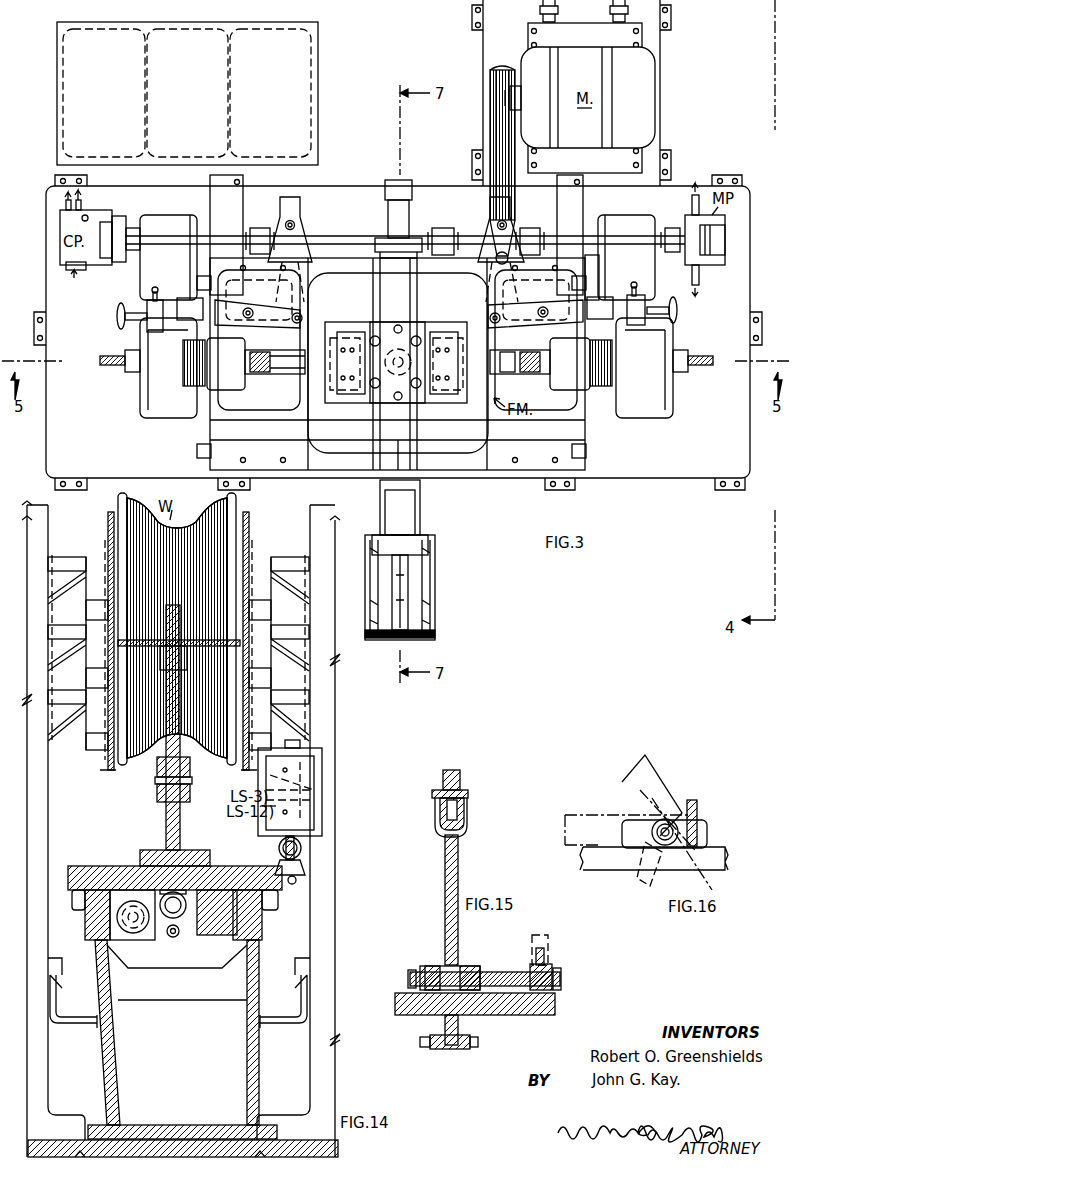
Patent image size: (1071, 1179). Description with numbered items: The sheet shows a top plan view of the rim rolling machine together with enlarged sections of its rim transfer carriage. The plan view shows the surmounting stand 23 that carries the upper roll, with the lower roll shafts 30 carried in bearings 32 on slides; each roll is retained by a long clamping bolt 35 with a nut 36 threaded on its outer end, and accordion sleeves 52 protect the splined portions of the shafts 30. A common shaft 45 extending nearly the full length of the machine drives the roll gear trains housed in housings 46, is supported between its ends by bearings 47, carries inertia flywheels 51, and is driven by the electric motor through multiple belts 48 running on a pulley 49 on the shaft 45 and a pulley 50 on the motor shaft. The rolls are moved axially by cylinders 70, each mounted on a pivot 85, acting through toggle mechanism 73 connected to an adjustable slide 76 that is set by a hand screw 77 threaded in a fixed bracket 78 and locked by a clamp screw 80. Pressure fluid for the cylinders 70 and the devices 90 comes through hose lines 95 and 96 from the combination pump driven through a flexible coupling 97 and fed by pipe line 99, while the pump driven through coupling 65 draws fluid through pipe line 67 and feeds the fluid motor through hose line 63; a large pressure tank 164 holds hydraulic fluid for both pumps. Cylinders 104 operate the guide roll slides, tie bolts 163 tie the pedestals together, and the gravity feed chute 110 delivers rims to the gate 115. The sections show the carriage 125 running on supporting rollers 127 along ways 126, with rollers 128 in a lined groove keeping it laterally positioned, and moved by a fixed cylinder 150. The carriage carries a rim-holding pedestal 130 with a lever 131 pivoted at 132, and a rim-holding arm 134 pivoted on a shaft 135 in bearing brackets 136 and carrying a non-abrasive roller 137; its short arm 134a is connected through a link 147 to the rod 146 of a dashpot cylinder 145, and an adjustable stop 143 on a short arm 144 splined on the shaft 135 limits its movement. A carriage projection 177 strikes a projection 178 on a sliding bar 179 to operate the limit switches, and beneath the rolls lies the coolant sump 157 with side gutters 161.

In FIG. 3, the pressure tank 164 is at (196, 100).
In FIG. 3, the inertia flywheel 51 is at (236, 217).
In FIG. 3, the belt 48 is at (492, 140).
In FIG. 3, the pulley 50 is at (495, 118).
In FIG. 3, the pulley 49 is at (498, 218).
In FIG. 3, the common shaft 45 is at (340, 235).
In FIG. 3, the flexible hose line 95 is at (57, 202).
In FIG. 3, the flexible hose line 96 is at (81, 201).
In FIG. 3, the flexible coupling 97 is at (124, 225).
In FIG. 3, the pipe line 99 is at (70, 272).
In FIG. 3, the housing 46 is at (170, 266).
In FIG. 3, the bearing 47 is at (260, 228).
In FIG. 3, the cylinder 70 is at (297, 212).
In FIG. 3, the pivot 85 is at (295, 226).
In FIG. 3, the cylinder 104 is at (412, 205).
In FIG. 3, the flexible coupling 65 is at (670, 228).
In FIG. 3, the pipe line 67 is at (685, 199).
In FIG. 3, the flexible hose line 63 is at (699, 272).
In FIG. 3, the hand screw 77 is at (117, 314).
In FIG. 3, the clamp screw 80 is at (158, 291).
In FIG. 3, the fixed bracket 78 is at (192, 320).
In FIG. 3, the adjustable slide 76 is at (590, 280).
In FIG. 3, the nut 36 is at (130, 356).
In FIG. 3, the clamping bolt 35 is at (113, 366).
In FIG. 3, the accordion sleeve 52 is at (193, 386).
In FIG. 3, the bearing 32 is at (235, 372).
In FIG. 3, the shaft 30 is at (287, 371).
In FIG. 3, the stand 23 is at (316, 408).
In FIG. 3, the fluid operated device 90 is at (403, 330).
In FIG. 3, the toggle mechanism 73 is at (270, 312).
In FIG. 3, the tie bolt 163 is at (197, 283).
In FIG. 3, the gravity feed chute 110 is at (425, 608).
In FIG. 14, the gravity feed chute 110 is at (108, 518).
In FIG. 3, the gate 115 is at (405, 565).
In FIG. 14, the rim-holding pedestal 130 is at (180, 614).
In FIG. 14, the lever 131 is at (190, 767).
In FIG. 14, the pivot 132 is at (192, 785).
In FIG. 14, the sliding bar 179 is at (280, 850).
In FIG. 14, the projection 178 is at (305, 862).
In FIG. 14, the actuating projection 177 is at (293, 885).
In FIG. 14, the carriage 125 is at (108, 866).
In FIG. 15, the carriage 125 is at (555, 1006).
In FIG. 16, the carriage 125 is at (726, 857).
In FIG. 14, the roller 128 is at (243, 862).
In FIG. 14, the way 126 is at (88, 942).
In FIG. 14, the supporting roller 127 is at (78, 912).
In FIG. 14, the cylinder 150 is at (128, 934).
In FIG. 14, the dashpot cylinder 145 is at (166, 920).
In FIG. 14, the rod 146 is at (178, 936).
In FIG. 14, the sump 157 is at (175, 1124).
In FIG. 14, the gutter 161 is at (90, 1027).
In FIG. 15, the roller 137 is at (452, 778).
In FIG. 15, the rim-holding arm 134 is at (458, 856).
In FIG. 16, the rim-holding arm 134 is at (648, 762).
In FIG. 15, the short arm 134a is at (445, 1029).
In FIG. 16, the short arm 134a is at (645, 878).
In FIG. 15, the shaft 135 is at (496, 972).
In FIG. 16, the shaft 135 is at (652, 832).
In FIG. 15, the bearing bracket 136 is at (426, 966).
In FIG. 15, the adjustable stop 143 is at (541, 962).
In FIG. 16, the adjustable stop 143 is at (697, 805).
In FIG. 16, the short arm 144 is at (708, 827).
In FIG. 15, the link 147 is at (452, 1050).